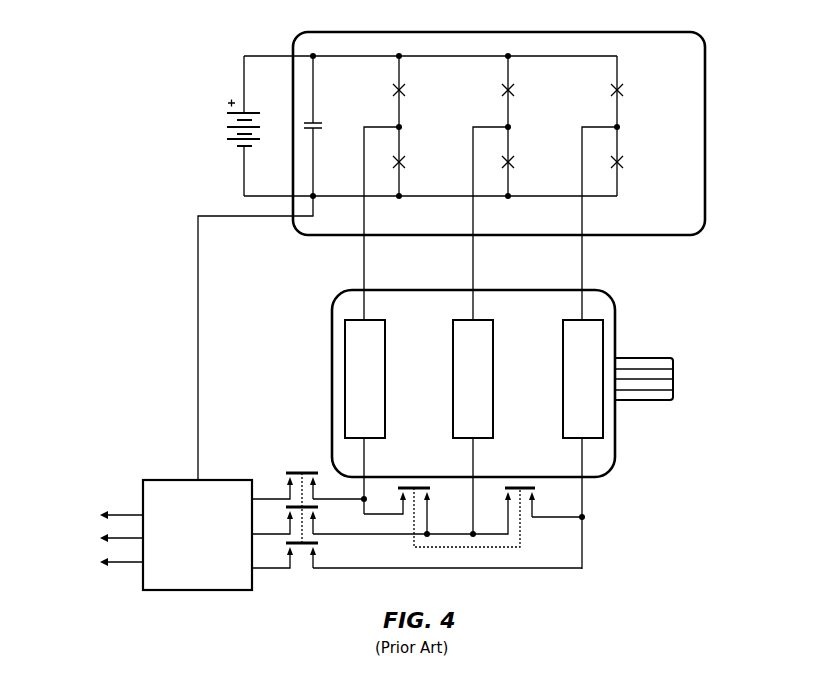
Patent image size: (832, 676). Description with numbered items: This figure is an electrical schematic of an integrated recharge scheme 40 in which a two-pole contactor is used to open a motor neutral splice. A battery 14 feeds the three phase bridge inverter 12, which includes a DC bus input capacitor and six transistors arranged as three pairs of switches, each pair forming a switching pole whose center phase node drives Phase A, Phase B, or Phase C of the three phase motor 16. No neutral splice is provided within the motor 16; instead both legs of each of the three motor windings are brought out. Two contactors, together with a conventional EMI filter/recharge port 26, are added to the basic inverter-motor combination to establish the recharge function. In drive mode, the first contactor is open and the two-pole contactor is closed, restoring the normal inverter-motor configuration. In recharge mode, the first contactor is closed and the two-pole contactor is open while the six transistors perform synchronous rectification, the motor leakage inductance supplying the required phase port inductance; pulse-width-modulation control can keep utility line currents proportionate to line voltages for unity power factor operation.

The three phase bridge inverter 12 is at (618, 32).
The battery 14 is at (228, 95).
The three phase motor 16 is at (617, 338).
The EMI filter/recharge port 26 is at (142, 492).
The integrated recharge scheme 40 is at (752, 46).